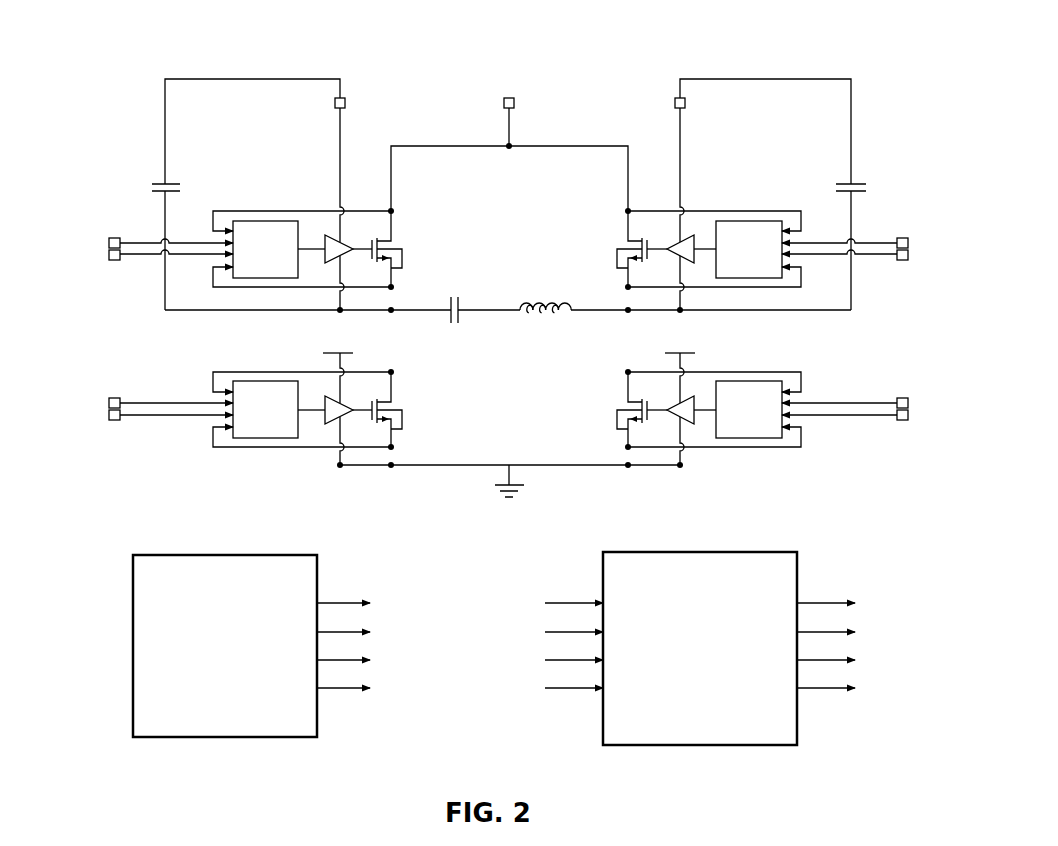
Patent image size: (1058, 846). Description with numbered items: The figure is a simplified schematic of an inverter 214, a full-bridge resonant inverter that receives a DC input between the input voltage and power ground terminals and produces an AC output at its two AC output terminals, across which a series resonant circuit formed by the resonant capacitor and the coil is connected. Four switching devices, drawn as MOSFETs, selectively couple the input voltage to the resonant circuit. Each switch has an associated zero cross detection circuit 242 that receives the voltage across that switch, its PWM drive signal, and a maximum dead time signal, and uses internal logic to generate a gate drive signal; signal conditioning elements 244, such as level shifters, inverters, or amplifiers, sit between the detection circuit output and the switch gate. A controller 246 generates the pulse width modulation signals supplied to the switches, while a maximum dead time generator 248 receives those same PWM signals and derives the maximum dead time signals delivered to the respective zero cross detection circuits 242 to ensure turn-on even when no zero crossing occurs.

The inverter 214 is at (627, 51).
The zero cross detection circuit 242 is at (259, 221).
The signal conditioning elements 244 is at (323, 238).
The controller 246 is at (227, 740).
The maximum dead time generator 248 is at (692, 748).